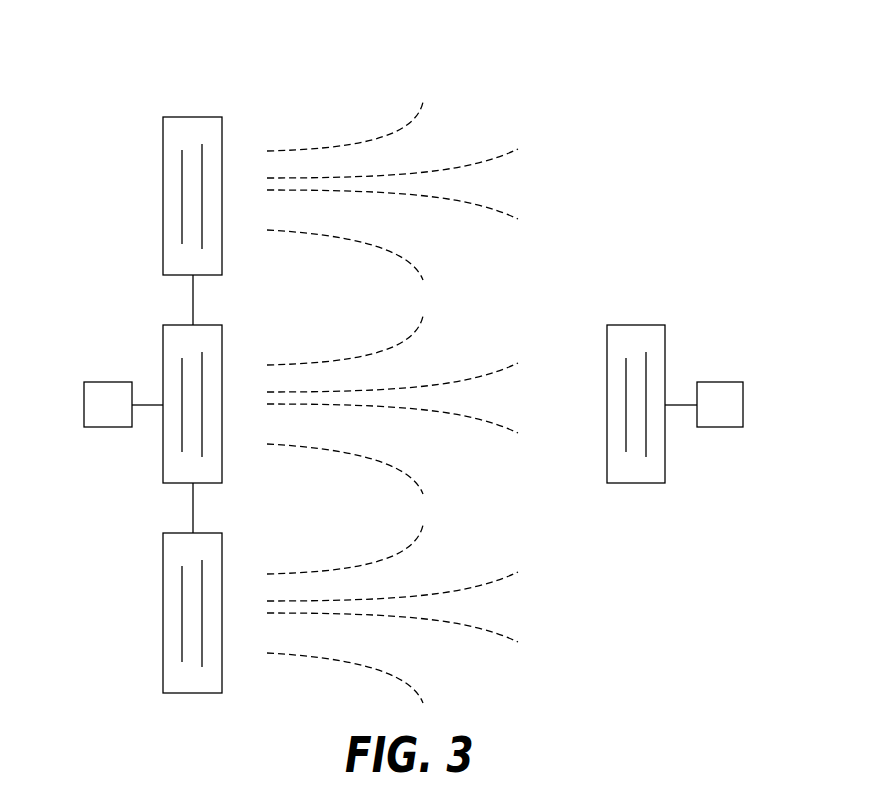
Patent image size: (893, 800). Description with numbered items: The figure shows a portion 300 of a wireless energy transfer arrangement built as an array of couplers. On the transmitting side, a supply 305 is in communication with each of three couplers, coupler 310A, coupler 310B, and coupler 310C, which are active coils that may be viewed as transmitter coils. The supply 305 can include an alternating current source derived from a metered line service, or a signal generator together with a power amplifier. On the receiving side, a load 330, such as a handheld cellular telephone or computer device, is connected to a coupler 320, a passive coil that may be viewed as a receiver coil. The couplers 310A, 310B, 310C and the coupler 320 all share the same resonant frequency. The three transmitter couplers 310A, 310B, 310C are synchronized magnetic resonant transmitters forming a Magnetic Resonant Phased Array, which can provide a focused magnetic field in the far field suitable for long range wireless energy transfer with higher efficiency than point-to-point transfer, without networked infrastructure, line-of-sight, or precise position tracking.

The portion 300 is at (287, 55).
The supply 305 is at (108, 382).
The coupler 310A is at (176, 117).
The coupler 310B is at (176, 325).
The coupler 310C is at (176, 533).
The coupler 320 is at (618, 325).
The load 330 is at (720, 382).